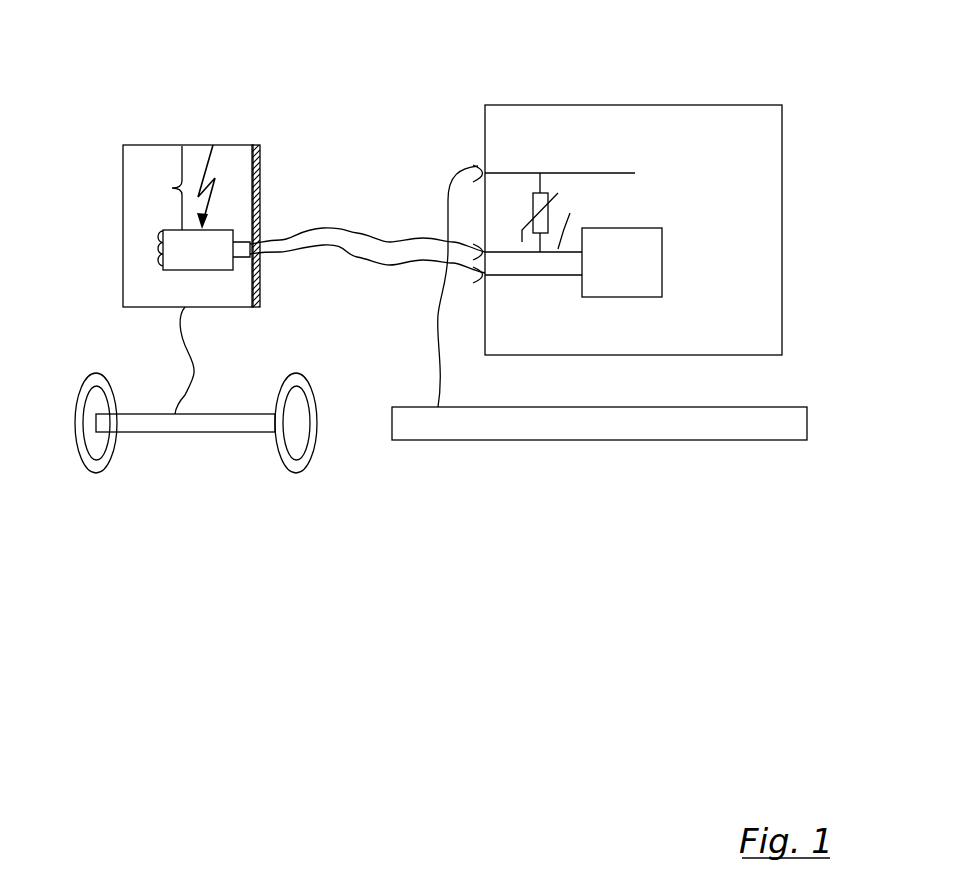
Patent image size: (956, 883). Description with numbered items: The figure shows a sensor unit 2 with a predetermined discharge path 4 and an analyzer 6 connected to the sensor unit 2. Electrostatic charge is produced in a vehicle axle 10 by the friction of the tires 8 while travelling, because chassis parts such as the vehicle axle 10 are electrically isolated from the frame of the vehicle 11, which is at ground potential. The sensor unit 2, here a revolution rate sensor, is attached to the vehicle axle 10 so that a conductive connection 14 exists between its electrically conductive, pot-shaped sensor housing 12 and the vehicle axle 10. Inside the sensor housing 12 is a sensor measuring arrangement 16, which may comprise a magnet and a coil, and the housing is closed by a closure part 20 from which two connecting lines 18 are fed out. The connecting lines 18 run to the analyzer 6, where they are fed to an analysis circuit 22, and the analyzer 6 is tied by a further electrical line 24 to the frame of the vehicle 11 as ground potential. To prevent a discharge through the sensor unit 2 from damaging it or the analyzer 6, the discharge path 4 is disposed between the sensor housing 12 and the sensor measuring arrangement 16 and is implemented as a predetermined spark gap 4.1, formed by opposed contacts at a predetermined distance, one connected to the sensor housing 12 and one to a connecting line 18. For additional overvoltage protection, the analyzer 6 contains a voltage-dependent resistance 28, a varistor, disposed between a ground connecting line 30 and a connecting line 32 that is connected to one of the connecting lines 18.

The sensor unit 2 is at (148, 110).
The predetermined discharge path 4 is at (167, 188).
The predetermined spark gap 4.1 is at (209, 178).
The analyzer 6 is at (555, 82).
The tires 8 is at (297, 430).
The vehicle axle 10 is at (212, 423).
The frame of a vehicle 11 is at (560, 423).
The sensor housing 12 is at (123, 184).
The conductive connection 14 is at (183, 355).
The sensor measuring arrangement 16 is at (157, 249).
The connecting lines 18 is at (358, 233).
The closure part 20 is at (257, 173).
The analysis circuit 22 is at (628, 263).
The electrical line 24 is at (437, 318).
The voltage-dependent resistance 28 is at (558, 193).
The ground connecting line 30 is at (597, 173).
The connecting line 32 is at (578, 220).